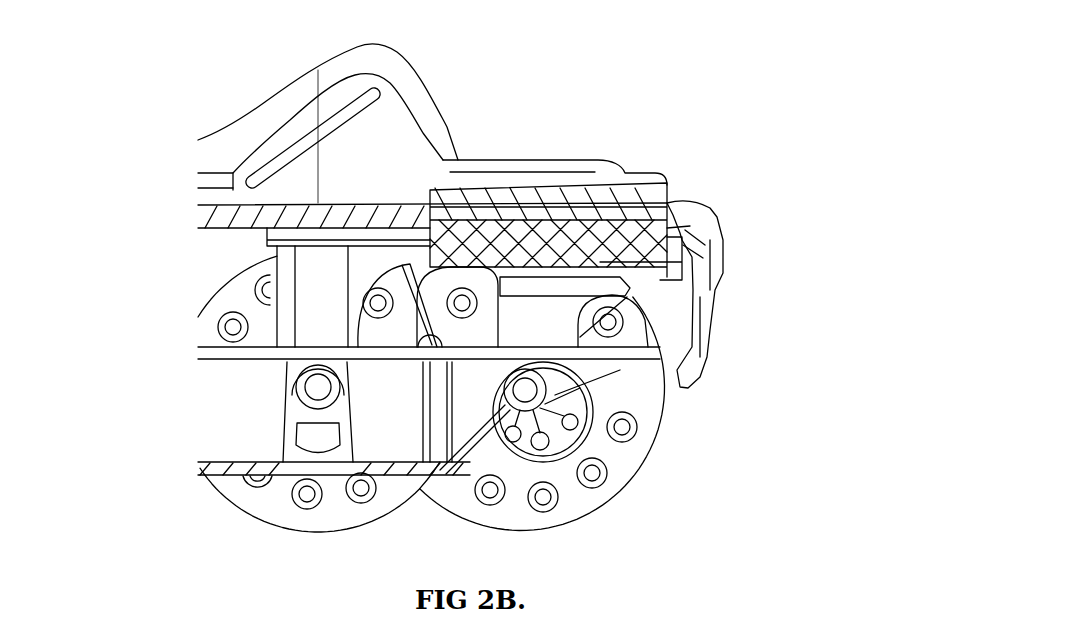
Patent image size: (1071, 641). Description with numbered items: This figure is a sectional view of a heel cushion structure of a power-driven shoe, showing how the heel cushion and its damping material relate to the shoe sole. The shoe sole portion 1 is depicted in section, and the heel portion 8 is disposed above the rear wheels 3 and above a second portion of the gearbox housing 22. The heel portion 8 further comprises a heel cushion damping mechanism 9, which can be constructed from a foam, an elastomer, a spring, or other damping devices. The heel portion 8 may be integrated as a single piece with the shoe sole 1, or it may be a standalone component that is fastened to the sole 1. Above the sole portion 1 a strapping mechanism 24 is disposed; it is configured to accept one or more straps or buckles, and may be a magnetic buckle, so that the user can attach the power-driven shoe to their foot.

The shoe sole portion 1 is at (455, 152).
The rear wheels 3 is at (600, 528).
The heel portion 8 is at (668, 170).
The heel cushion damping mechanism 9 is at (712, 210).
The gearbox housing 22 is at (343, 470).
The strapping mechanism 24 is at (230, 108).